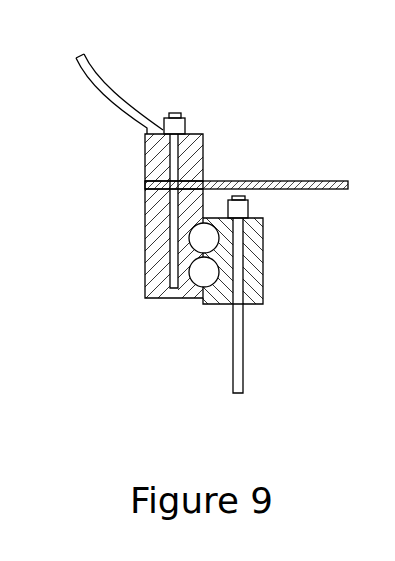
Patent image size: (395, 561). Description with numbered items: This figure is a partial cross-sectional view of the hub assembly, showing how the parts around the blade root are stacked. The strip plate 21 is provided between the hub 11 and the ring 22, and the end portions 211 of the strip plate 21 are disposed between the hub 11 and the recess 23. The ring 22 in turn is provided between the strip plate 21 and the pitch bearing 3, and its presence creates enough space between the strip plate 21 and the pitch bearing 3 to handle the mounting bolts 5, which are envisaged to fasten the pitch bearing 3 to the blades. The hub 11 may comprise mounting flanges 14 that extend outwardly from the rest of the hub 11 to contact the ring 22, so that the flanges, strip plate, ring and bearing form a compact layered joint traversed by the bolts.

The hub 11 is at (101, 90).
The mounting flanges 14 is at (144, 147).
The end portions 211 is at (146, 175).
The strip plate 21 is at (220, 181).
The recess 23 is at (145, 199).
The ring 22 is at (145, 218).
The pitch bearing 3 is at (184, 297).
The mounting bolts 5 is at (244, 345).